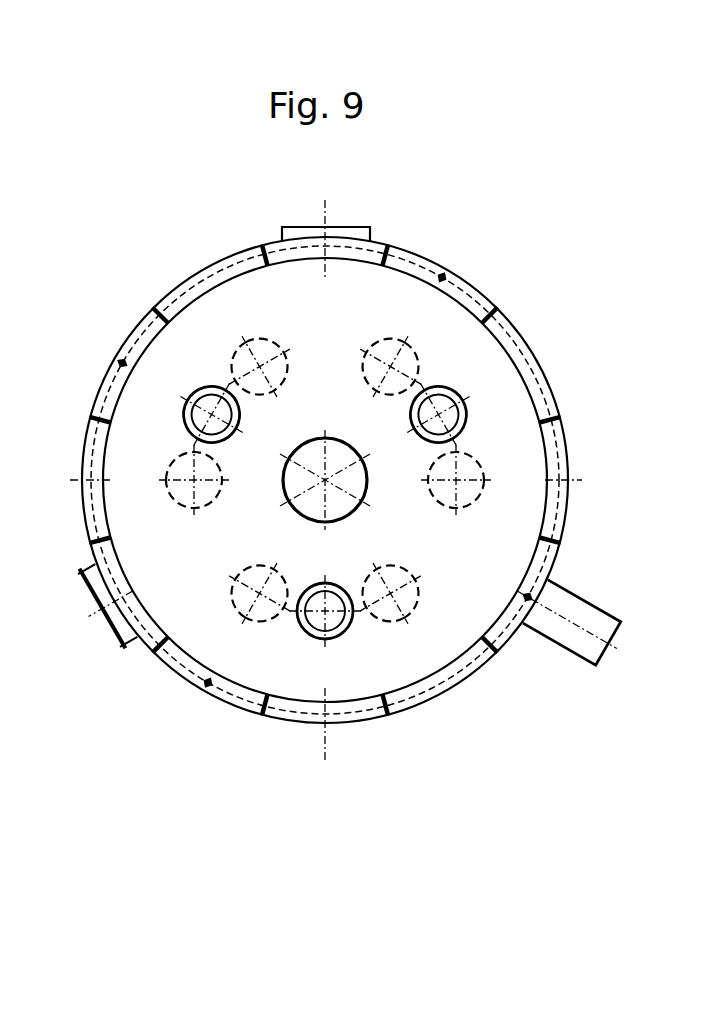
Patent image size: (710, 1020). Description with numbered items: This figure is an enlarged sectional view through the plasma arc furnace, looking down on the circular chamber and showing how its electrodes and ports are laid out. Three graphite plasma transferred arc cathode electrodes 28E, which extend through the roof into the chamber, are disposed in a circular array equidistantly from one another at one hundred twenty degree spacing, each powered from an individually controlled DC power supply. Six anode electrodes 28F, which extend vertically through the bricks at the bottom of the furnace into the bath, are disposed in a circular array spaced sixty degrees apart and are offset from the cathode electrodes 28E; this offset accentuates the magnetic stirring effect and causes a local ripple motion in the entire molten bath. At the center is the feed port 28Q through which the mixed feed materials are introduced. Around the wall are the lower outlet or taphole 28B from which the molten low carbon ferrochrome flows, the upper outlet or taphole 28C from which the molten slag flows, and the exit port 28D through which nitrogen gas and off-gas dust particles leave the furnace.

The lower outlet or taphole 28B is at (110, 628).
The upper outlet or taphole 28C is at (583, 592).
The exit port 28D is at (355, 233).
The cathode electrodes 28E is at (193, 395).
The anode electrodes 28F is at (292, 333).
The feed port 28Q is at (366, 468).